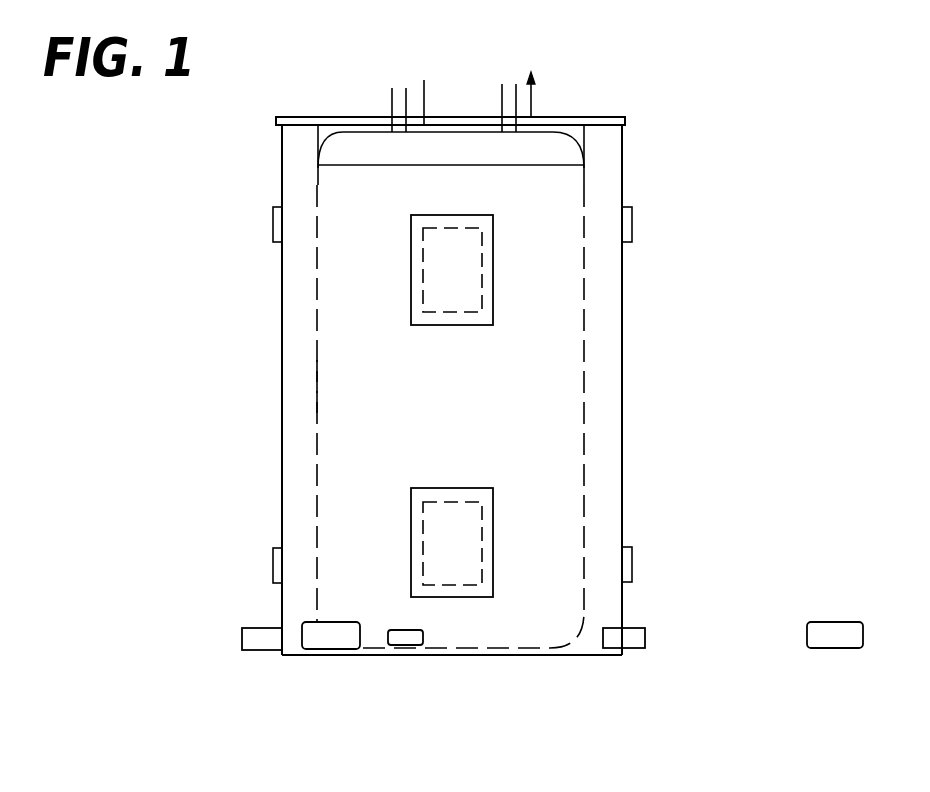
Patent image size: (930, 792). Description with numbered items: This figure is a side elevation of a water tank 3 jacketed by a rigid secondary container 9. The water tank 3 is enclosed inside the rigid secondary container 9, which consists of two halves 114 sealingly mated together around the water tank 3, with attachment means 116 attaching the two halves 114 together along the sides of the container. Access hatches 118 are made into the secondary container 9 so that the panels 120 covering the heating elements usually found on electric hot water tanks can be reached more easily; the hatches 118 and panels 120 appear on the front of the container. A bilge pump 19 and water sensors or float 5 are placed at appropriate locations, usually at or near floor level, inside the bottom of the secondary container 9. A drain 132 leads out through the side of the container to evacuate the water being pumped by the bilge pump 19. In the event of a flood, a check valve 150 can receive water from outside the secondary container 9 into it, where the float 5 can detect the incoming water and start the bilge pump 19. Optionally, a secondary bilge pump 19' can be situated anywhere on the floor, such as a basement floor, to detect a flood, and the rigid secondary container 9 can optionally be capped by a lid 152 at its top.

The water tank 3 is at (236, 194).
The lid 152 is at (337, 117).
The rigid secondary container 9 is at (282, 310).
The halves 114 is at (295, 398).
The attachment means 116 is at (282, 222).
The access hatches 118 is at (495, 507).
The panels 120 is at (458, 312).
The bilge pump 19 is at (321, 677).
The water sensors or float 5 is at (406, 645).
The drain 132 is at (242, 640).
The check valve 150 is at (630, 638).
The secondary bilge pump 19' is at (824, 676).